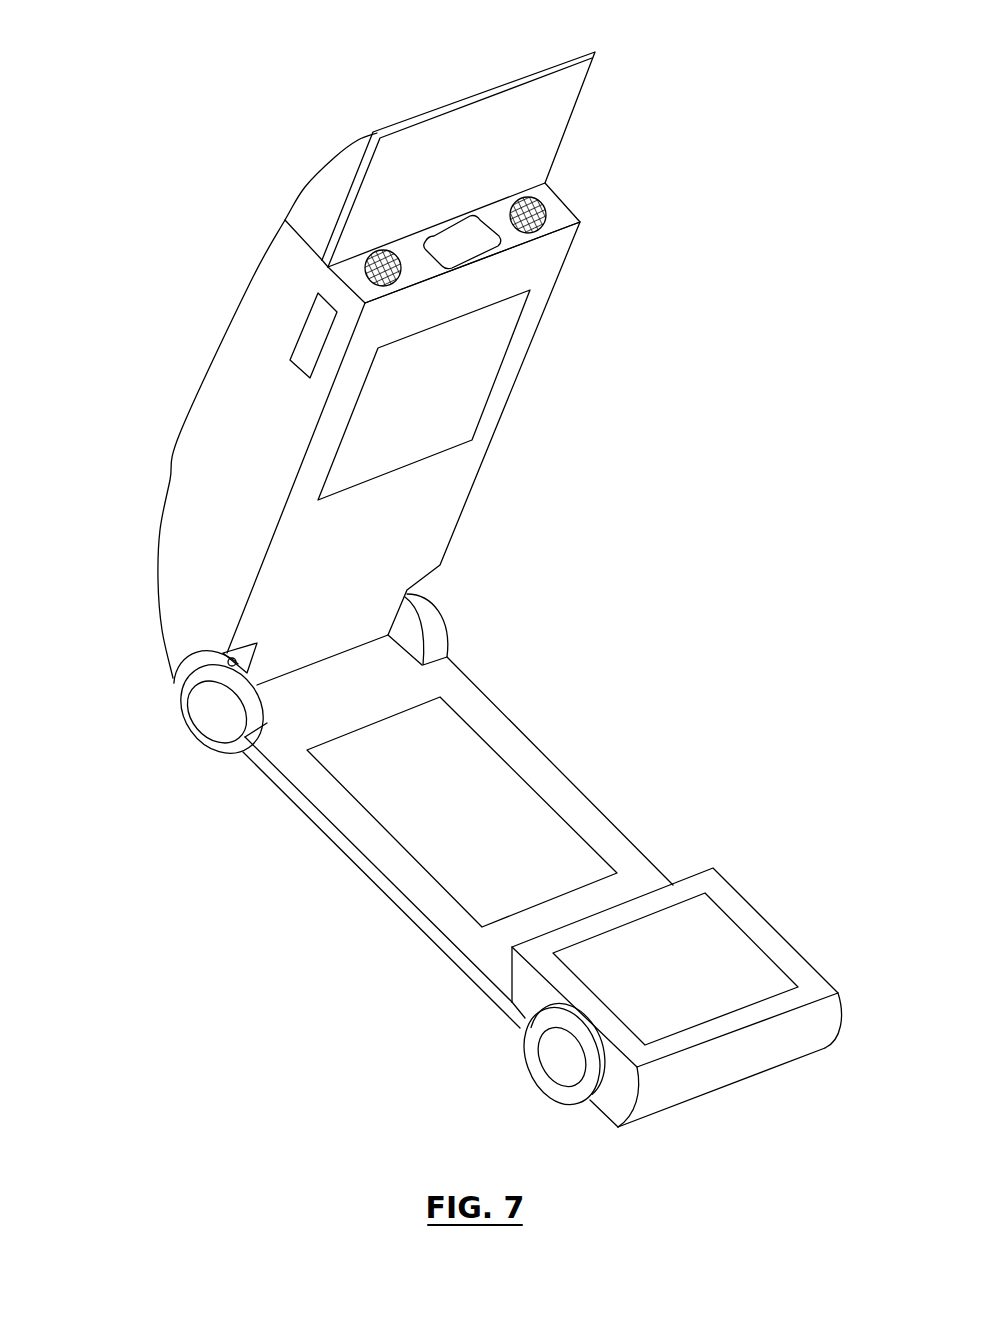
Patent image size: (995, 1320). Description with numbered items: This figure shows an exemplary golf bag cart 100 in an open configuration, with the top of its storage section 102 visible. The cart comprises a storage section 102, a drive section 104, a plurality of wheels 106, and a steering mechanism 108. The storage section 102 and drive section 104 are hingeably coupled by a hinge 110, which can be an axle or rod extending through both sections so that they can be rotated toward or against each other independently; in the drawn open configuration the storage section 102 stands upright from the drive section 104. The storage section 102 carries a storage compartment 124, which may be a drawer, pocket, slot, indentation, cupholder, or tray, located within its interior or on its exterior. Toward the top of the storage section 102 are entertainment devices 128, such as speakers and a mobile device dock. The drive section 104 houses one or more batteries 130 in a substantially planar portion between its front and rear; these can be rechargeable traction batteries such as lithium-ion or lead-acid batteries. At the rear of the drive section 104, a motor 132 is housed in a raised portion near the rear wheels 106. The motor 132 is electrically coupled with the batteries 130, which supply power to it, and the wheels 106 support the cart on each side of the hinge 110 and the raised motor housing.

The golf bag cart 100 is at (585, 648).
The storage section 102 is at (195, 497).
The drive section 104 is at (622, 850).
The wheels 106 is at (212, 708).
The steering mechanism 108 is at (317, 333).
The hinge 110 is at (227, 653).
The storage compartment 124 is at (458, 362).
The entertainment devices 128 is at (548, 206).
The batteries 130 is at (410, 796).
The motor 132 is at (733, 943).